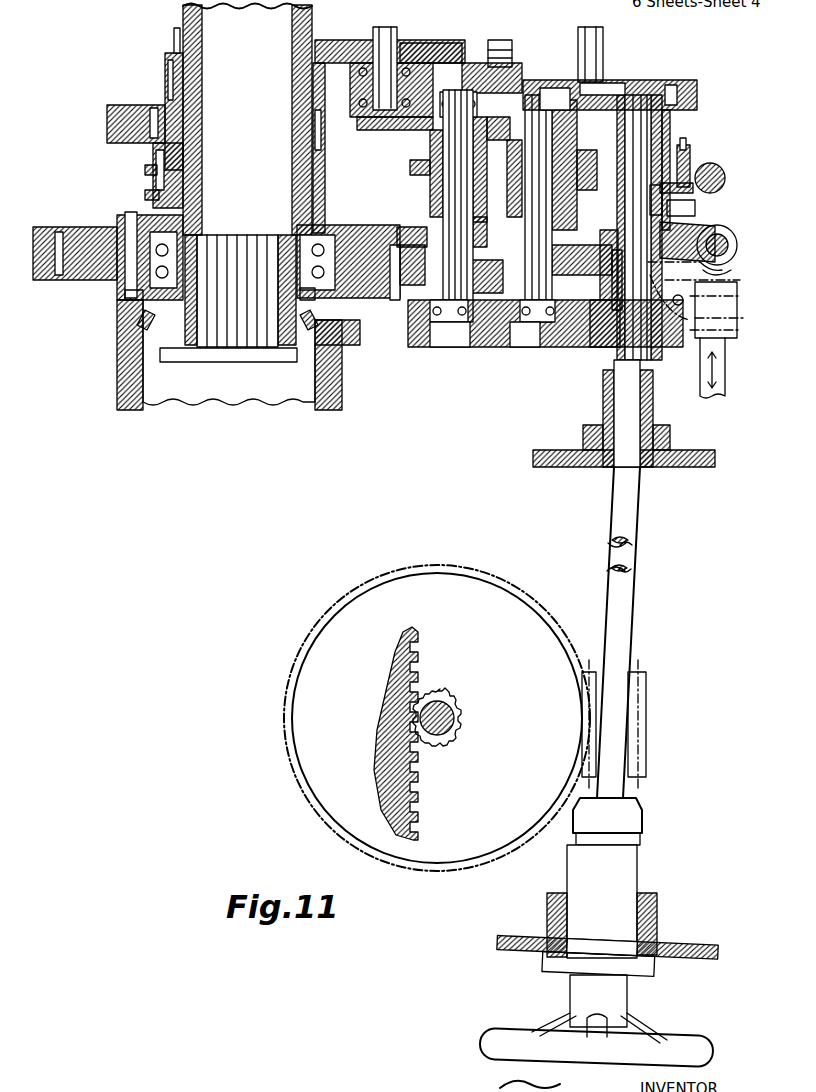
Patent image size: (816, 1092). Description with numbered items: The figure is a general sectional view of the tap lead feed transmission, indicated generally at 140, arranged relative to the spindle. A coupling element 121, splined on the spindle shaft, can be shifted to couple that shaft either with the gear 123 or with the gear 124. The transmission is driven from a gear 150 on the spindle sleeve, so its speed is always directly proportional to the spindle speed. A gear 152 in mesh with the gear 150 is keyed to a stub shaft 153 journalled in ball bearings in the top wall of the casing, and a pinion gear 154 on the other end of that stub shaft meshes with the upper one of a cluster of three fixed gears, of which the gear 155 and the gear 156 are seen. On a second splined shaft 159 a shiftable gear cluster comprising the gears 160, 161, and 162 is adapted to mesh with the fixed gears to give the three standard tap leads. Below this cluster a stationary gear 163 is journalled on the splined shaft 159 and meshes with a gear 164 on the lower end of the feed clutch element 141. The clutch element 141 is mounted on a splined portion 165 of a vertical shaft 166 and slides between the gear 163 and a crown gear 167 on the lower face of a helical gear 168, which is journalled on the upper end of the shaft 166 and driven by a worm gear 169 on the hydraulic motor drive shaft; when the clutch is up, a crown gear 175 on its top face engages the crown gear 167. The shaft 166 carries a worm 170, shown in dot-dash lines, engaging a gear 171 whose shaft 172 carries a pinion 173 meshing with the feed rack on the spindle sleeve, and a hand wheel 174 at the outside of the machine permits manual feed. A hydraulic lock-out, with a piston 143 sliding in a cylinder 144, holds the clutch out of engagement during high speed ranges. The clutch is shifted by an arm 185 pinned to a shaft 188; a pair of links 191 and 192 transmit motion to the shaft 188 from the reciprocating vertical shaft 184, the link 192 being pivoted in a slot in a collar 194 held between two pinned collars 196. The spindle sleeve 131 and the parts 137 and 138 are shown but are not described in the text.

The coupling element 121 is at (153, 180).
The gear 123 is at (156, 103).
The gear 124 is at (92, 232).
The spindle sleeve 131 is at (183, 18).
The bar 137 is at (440, 235).
The bar 138 is at (480, 250).
The tap lead transmission 140 is at (409, 199).
The feed clutch element 141 is at (690, 210).
The piston 143 is at (592, 54).
The cylinder 144 is at (640, 115).
The gear 150 is at (323, 40).
The gear 152 is at (433, 43).
The stub shaft 153 is at (385, 28).
The pinion gear 154 is at (388, 128).
The gear 155 is at (420, 130).
The gear 156 is at (412, 172).
The second splined shaft 159 is at (528, 330).
The gear 160 is at (475, 120).
The gear 161 is at (552, 150).
The gear 162 is at (528, 237).
The stationary gear 163 is at (557, 250).
The gear 164 is at (705, 232).
The splined portion 165 is at (580, 330).
The shaft 166 is at (670, 126).
The crown gear 167 is at (693, 190).
The helical gear 168 is at (688, 172).
The worm gear 169 is at (724, 172).
The worm 170 is at (652, 722).
The gear 171 is at (284, 740).
The shaft 172 is at (452, 712).
The pinion 173 is at (455, 717).
The hand wheel 174 is at (508, 1038).
The crown gear 175 is at (660, 202).
The vertical shaft 184 is at (723, 386).
The arm 185 is at (725, 265).
The shaft 188 is at (738, 245).
The link 191 is at (730, 280).
The link 192 is at (693, 306).
The collar 194 is at (739, 318).
The pinned collars 196 is at (738, 297).